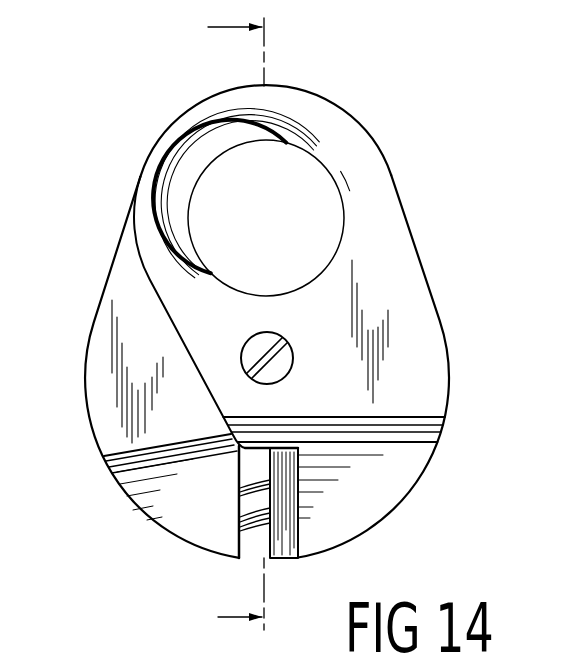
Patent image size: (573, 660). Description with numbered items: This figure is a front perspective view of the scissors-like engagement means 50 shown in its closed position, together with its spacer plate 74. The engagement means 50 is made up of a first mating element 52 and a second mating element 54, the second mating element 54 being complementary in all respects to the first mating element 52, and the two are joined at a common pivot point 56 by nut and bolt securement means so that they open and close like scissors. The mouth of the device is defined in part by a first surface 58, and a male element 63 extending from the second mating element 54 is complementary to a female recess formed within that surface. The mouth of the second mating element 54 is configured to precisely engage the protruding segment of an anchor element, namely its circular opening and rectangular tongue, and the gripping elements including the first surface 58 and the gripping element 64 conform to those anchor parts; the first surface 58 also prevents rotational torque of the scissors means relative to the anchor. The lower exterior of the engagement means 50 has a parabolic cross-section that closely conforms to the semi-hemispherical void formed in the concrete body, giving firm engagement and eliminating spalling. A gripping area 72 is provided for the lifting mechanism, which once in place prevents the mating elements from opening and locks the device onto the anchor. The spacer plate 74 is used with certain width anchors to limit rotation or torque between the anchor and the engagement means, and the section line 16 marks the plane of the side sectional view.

The section line 16 is at (220, 325).
The scissors-like engagement means 50 is at (265, 333).
The first mating element 52 is at (440, 396).
The second mating element 54 is at (90, 402).
The common pivot point 56 is at (286, 346).
The first surface 58 is at (292, 549).
The male element 63 is at (403, 481).
The gripping element 64 is at (247, 495).
The gripping area 72 is at (260, 203).
The spacer plate 74 is at (292, 534).